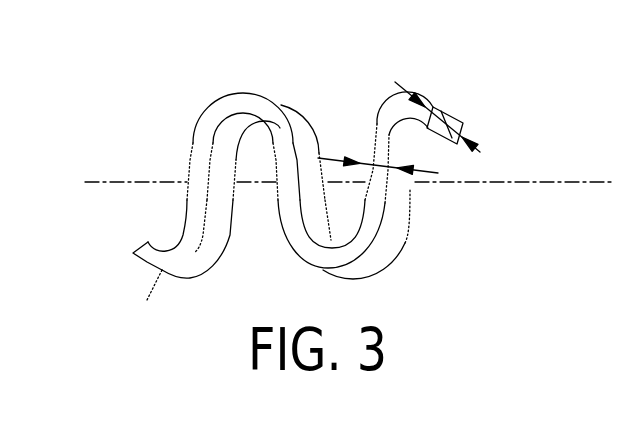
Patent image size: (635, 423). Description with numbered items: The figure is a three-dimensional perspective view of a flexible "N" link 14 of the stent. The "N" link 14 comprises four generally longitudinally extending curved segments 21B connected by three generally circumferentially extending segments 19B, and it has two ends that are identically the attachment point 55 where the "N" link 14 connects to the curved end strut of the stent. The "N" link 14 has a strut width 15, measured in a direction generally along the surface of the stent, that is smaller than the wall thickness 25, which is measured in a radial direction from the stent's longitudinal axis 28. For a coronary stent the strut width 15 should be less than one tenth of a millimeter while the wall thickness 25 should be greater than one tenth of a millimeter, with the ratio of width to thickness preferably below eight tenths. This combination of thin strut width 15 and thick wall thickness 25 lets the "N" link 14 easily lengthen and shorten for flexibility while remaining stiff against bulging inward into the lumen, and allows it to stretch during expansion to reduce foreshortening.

The flexible "N" link 14 is at (393, 60).
The strut width 15 is at (372, 127).
The circumferentially extending segments 19B is at (186, 214).
The longitudinally extending curved segments 21B is at (378, 92).
The wall thickness 25 is at (453, 125).
The longitudinal axis 28 is at (473, 183).
The attachment point 55 is at (147, 242).